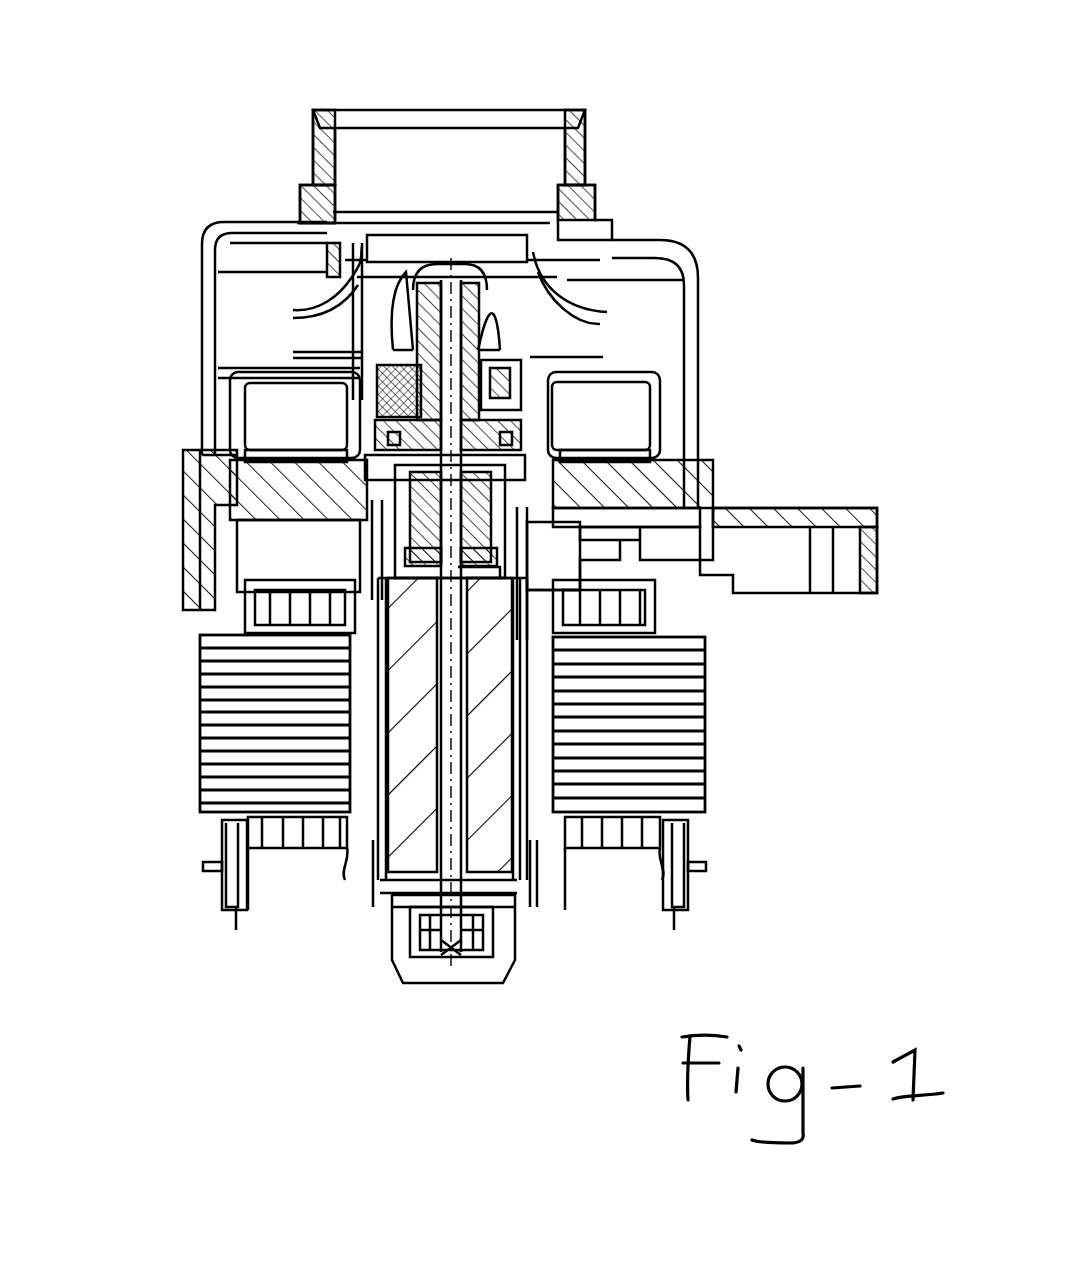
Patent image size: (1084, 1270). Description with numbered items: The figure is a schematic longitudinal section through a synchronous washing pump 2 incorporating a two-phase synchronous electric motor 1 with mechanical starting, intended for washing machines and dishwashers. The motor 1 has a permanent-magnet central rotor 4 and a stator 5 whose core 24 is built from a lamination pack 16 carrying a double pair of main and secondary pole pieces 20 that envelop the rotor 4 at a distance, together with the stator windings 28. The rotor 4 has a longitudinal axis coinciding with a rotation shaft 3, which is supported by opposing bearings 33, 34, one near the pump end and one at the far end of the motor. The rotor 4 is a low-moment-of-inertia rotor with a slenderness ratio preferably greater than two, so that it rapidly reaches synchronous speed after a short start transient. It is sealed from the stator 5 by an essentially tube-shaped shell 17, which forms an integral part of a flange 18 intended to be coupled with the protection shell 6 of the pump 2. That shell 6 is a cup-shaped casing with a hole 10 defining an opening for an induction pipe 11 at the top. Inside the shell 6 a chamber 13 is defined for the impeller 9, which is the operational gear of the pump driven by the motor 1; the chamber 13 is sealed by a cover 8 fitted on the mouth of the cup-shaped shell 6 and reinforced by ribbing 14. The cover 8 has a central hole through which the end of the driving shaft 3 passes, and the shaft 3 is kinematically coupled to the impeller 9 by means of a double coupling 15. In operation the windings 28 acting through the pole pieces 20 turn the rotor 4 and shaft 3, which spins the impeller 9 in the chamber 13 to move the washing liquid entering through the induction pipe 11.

The two-phase synchronous electric motor 1 is at (347, 853).
The synchronous washing pump 2 is at (682, 136).
The rotation shaft 3 is at (473, 950).
The permanent-magnet central rotor 4 is at (477, 644).
The stator 5 is at (262, 688).
The protection shell 6 is at (690, 283).
The cover 8 is at (218, 357).
The impeller 9 is at (577, 332).
The hole 10 is at (370, 217).
The induction pipe 11 is at (353, 130).
The chamber 13 is at (260, 303).
The ribbing 14 is at (318, 438).
The double coupling 15 is at (462, 372).
The lamination pack 16 is at (690, 643).
The shell 17 is at (527, 907).
The flange 18 is at (633, 500).
The pole pieces 20 is at (367, 733).
The stator core 24 is at (703, 716).
The stator windings 28 is at (270, 853).
The bearing 33 is at (405, 505).
The bearing 34 is at (455, 292).